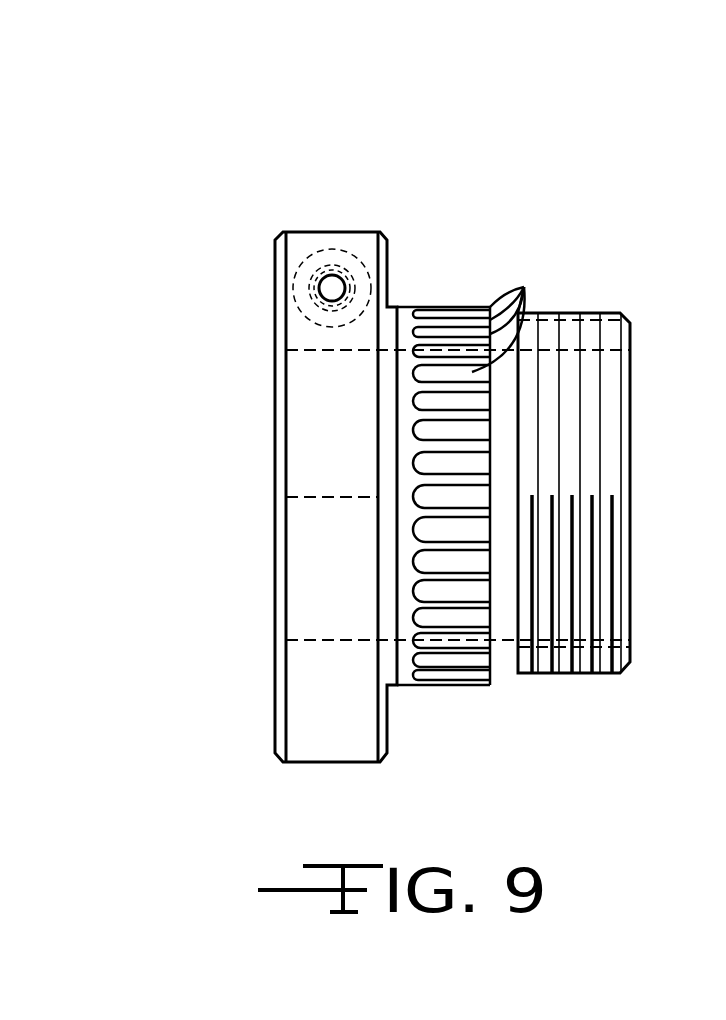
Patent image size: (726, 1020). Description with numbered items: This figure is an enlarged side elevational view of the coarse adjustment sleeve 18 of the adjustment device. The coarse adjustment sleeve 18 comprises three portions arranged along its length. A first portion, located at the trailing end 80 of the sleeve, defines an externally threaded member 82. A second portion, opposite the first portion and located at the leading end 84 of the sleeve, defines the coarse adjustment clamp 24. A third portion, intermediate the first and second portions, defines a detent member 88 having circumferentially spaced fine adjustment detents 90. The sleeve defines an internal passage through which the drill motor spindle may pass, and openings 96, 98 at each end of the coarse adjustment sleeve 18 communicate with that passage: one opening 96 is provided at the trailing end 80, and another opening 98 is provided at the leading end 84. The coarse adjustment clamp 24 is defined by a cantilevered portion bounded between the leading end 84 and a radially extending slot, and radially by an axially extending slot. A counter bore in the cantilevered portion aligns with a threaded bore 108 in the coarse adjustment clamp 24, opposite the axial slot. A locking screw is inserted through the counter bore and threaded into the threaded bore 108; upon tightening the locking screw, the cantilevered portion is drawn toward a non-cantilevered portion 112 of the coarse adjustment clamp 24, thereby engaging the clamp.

The coarse adjustment sleeve 18 is at (521, 154).
The coarse adjustment clamp 24 is at (345, 232).
The trailing end 80 is at (628, 630).
The externally threaded member 82 is at (608, 312).
The leading end 84 is at (276, 712).
The detent member 88 is at (423, 307).
The fine adjustment detents 90 is at (509, 314).
The opening 96 is at (604, 463).
The opening 98 is at (312, 606).
The threaded bore 108 is at (330, 288).
The non-cantilevered portion 112 is at (305, 375).